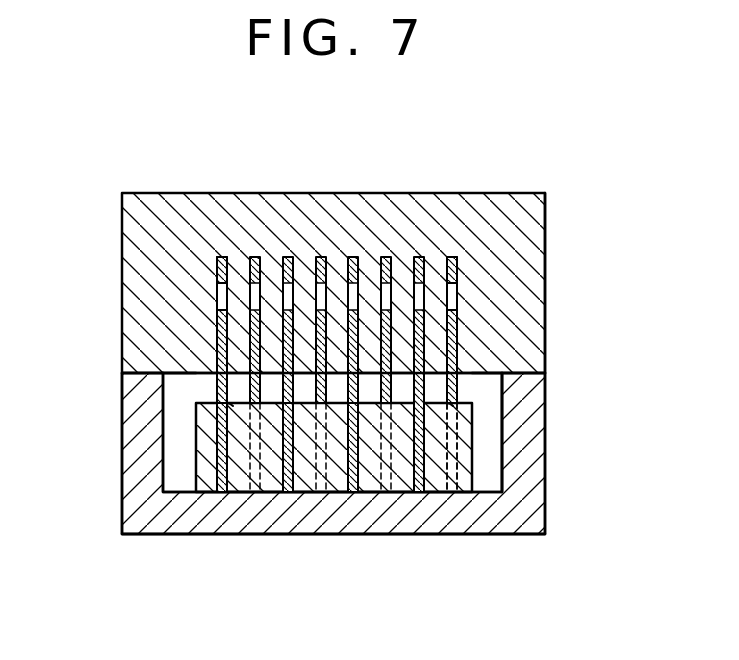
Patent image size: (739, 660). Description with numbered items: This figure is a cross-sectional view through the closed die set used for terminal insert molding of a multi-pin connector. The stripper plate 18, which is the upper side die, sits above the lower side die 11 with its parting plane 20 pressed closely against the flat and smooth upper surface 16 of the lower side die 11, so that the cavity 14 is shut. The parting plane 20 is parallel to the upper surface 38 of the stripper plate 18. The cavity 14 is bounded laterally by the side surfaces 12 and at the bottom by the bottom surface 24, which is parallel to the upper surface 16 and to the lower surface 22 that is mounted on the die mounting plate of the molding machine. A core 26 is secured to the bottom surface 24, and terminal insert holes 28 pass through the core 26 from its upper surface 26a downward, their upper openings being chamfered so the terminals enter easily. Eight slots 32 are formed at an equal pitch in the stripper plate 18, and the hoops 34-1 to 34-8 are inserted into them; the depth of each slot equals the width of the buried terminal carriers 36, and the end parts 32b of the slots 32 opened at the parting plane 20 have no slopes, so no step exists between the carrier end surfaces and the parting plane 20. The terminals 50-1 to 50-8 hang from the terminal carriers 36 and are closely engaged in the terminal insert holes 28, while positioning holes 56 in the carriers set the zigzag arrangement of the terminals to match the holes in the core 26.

The lower side die 11 is at (116, 446).
The side surfaces 12 is at (122, 415).
The cavity 14 is at (200, 391).
The upper surface 16 is at (148, 367).
The stripper plate 18 is at (569, 188).
The parting plane 20 is at (480, 376).
The lower surface 22 is at (172, 534).
The bottom surface 24 is at (483, 485).
The core 26 is at (196, 452).
The upper surface of the core 26a is at (453, 402).
The terminal insert holes 28 is at (362, 388).
The slots 32 is at (433, 257).
The end parts of the slots 32b is at (273, 392).
The hoop 34-1 is at (232, 258).
The hoop 34-8 is at (255, 112).
The terminal carriers 36 is at (212, 320).
The upper surface 38 is at (163, 194).
The terminals 50-1 is at (220, 493).
The terminals 50-8 is at (262, 628).
The positioning holes 56 is at (462, 297).